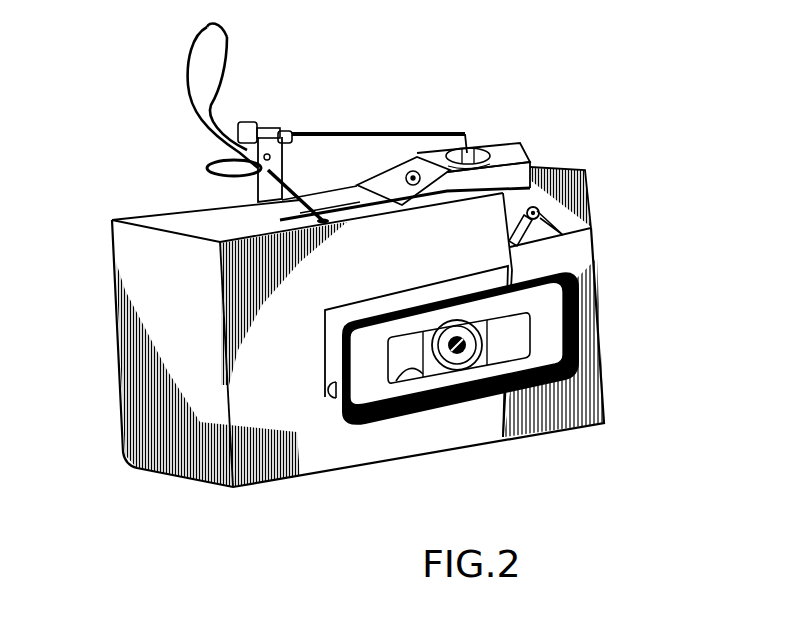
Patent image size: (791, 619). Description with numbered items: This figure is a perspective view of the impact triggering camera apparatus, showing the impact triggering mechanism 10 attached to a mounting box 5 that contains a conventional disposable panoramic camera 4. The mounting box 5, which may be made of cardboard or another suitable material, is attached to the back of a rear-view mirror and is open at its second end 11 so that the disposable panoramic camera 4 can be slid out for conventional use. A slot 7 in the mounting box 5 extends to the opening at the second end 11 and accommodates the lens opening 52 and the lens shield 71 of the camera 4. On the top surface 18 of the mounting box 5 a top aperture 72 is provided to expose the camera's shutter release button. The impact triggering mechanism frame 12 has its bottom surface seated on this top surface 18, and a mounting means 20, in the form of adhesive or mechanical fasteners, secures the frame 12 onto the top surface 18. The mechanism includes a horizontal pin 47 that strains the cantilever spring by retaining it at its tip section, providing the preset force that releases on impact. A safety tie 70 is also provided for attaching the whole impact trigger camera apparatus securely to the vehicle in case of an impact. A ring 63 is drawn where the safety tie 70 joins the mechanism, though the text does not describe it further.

The disposable panoramic camera 4 is at (590, 228).
The mounting box 5 is at (127, 258).
The slot 7 is at (333, 387).
The impact triggering mechanism 10 is at (522, 142).
The second end 11 is at (517, 267).
The impact triggering mechanism frame 12 is at (337, 190).
The top surface 18 is at (227, 242).
The mounting means 20 is at (482, 192).
The horizontal pin 47 is at (315, 190).
The lens opening 52 is at (457, 350).
The strap ring 63 is at (245, 185).
The safety tie 70 is at (207, 27).
The lens shield 71 is at (405, 372).
The top aperture 72 is at (253, 195).